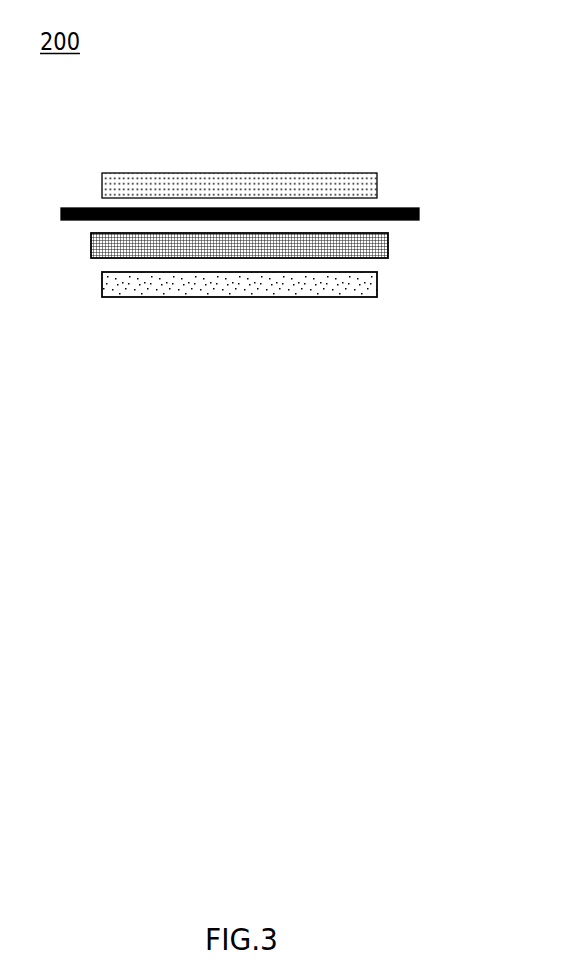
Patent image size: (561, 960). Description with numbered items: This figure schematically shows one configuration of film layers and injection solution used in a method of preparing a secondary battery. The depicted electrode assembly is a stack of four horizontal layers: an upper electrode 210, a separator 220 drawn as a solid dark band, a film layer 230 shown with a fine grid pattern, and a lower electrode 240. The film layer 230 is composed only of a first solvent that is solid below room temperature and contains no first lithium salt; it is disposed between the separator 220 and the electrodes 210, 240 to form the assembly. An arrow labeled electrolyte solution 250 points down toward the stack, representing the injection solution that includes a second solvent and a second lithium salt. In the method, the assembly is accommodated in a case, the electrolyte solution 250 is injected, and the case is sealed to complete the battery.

The electrode 210 is at (377, 185).
The separator 220 is at (419, 214).
The film layer including first solvent 230 is at (388, 246).
The electrode 240 is at (377, 285).
The electrolyte solution (injection solution) including second solvent and second li 250 is at (253, 151).